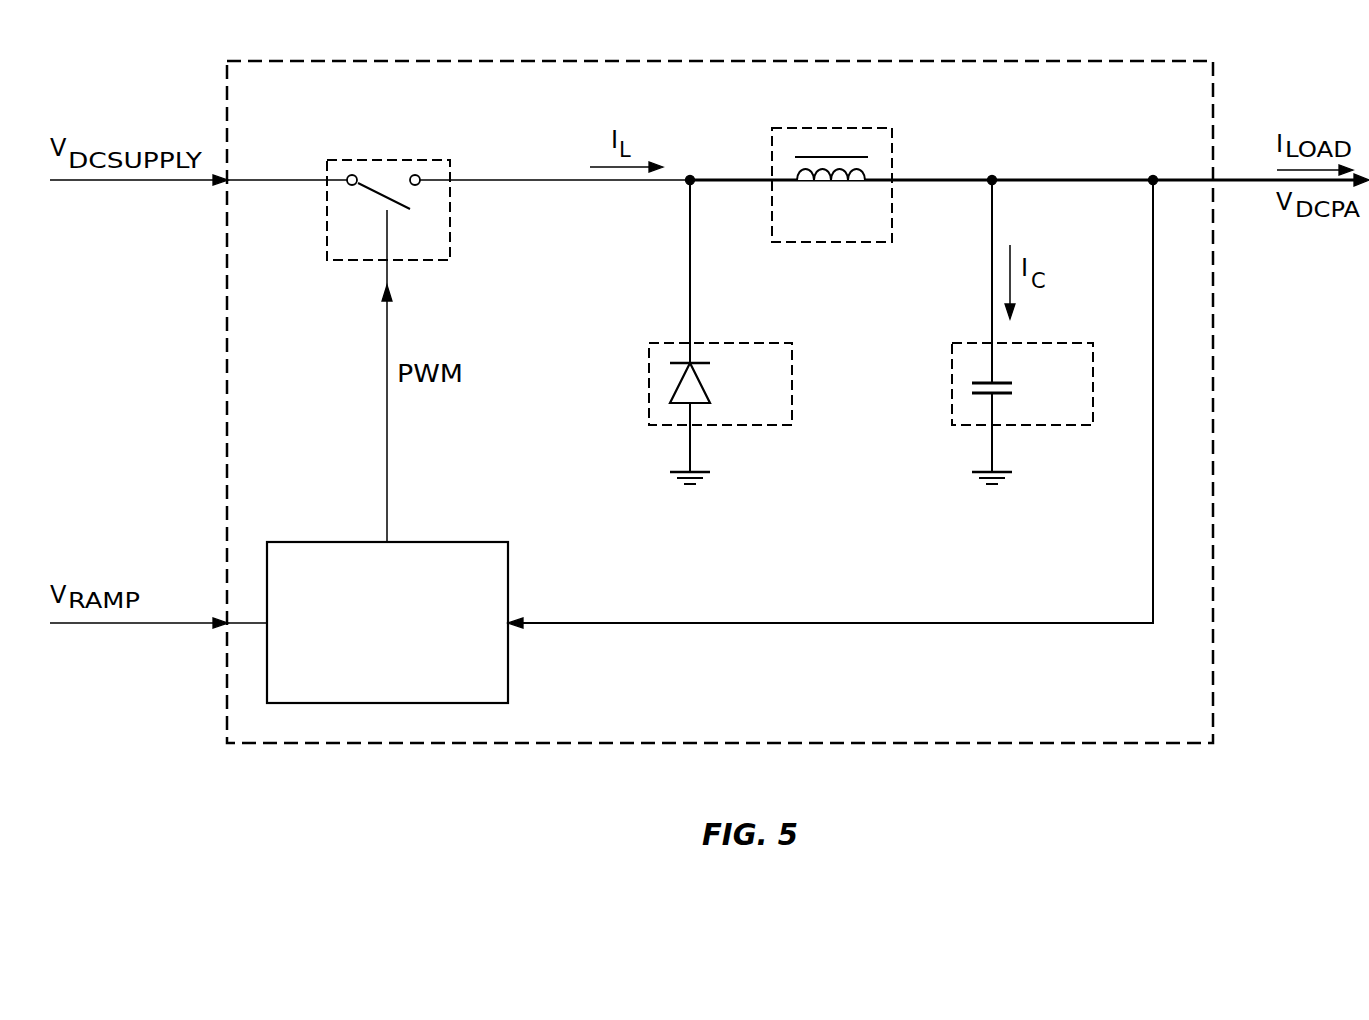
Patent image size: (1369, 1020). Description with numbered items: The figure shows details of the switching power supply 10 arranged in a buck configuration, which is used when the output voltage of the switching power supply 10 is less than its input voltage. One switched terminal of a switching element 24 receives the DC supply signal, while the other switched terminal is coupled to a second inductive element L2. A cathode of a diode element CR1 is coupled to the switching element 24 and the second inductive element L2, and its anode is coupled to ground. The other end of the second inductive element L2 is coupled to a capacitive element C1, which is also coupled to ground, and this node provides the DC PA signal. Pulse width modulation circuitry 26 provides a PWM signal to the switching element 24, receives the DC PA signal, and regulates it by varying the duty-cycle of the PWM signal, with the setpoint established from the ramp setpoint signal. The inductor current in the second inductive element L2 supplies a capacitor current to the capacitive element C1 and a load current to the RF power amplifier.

The switching power supply 10 is at (1166, 729).
The switching element 24 is at (433, 248).
The pulse width modulation circuitry 26 is at (403, 679).
The second inductive element L2 is at (853, 228).
The diode element CR1 is at (773, 396).
The capacitive element C1 is at (1068, 396).